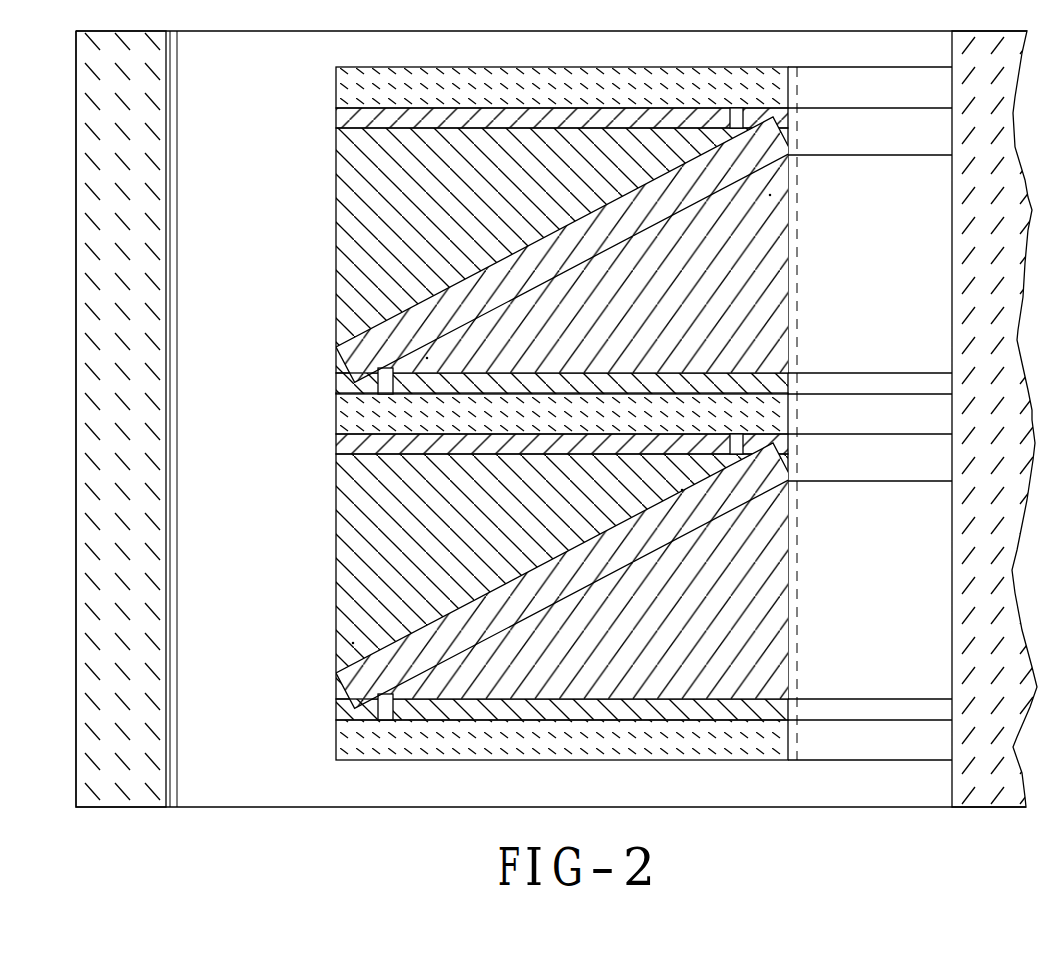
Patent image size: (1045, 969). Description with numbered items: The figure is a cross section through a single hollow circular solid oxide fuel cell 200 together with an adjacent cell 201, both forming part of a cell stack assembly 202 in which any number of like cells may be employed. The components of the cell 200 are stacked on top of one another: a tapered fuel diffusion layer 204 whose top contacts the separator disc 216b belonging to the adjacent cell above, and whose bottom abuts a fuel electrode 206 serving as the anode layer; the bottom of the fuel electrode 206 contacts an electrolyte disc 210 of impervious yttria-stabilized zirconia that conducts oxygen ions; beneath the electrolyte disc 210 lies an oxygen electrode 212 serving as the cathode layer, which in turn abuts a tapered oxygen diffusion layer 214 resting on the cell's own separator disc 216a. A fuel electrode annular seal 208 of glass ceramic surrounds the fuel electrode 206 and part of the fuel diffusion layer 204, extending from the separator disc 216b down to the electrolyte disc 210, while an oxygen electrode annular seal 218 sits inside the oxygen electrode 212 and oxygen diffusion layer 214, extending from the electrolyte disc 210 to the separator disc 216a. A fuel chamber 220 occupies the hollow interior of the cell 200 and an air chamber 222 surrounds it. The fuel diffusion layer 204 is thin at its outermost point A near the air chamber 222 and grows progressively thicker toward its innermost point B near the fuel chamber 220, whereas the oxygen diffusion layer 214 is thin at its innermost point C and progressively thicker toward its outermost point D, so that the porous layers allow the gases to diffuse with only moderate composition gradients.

The cell 200 is at (548, 475).
The adjacent cell 201 is at (683, 707).
The cell stack assembly 202 is at (428, 777).
The fuel diffusion layer 204 is at (720, 273).
The fuel electrode 206 is at (701, 384).
The fuel electrode annular seal 208 is at (368, 387).
The electrolyte disc 210 is at (373, 412).
The oxygen electrode 212 is at (410, 462).
The oxygen diffusion layer 214 is at (412, 530).
The separator disc 216a is at (395, 663).
The separator disc 216b is at (705, 183).
The oxygen electrode annular seal 218 is at (780, 440).
The fuel chamber 220 is at (894, 553).
The air chamber 222 is at (243, 172).
The point A is at (427, 358).
The point B is at (770, 195).
The point C is at (682, 490).
The point D is at (353, 643).